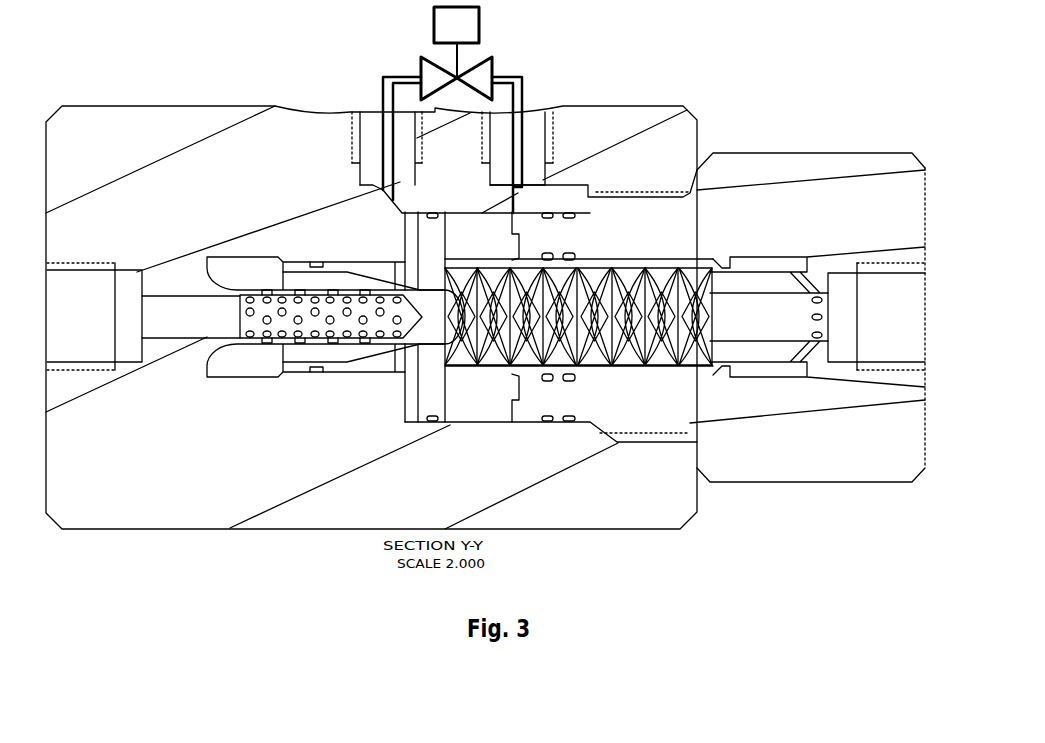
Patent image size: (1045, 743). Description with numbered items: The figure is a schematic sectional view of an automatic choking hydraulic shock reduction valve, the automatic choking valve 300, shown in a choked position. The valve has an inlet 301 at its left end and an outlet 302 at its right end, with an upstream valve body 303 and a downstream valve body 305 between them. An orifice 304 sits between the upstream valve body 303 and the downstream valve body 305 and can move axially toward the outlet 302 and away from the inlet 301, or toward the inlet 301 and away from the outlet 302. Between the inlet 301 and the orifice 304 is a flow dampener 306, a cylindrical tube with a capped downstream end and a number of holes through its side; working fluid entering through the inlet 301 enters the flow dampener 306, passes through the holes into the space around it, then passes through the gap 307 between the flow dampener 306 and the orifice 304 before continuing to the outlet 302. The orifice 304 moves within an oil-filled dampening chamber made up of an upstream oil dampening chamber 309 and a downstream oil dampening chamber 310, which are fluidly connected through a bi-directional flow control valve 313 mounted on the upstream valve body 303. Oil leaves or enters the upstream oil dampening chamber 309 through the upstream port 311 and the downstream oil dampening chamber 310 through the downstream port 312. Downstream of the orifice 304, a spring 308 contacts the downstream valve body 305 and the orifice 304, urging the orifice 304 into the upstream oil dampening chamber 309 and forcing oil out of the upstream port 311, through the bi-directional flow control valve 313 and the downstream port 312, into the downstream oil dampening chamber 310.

The automatic choking valve 300 is at (762, 97).
The inlet 301 is at (94, 316).
The outlet 302 is at (876, 316).
The upstream valve body 303 is at (371, 317).
The orifice 304 is at (422, 357).
The downstream valve body 305 is at (807, 317).
The flow dampener 306 is at (312, 316).
The gap 307 is at (407, 297).
The spring 308 is at (581, 325).
The upstream oil dampening chamber 309 is at (413, 228).
The downstream oil dampening chamber 310 is at (482, 317).
The upstream port 311 is at (395, 203).
The downstream port 312 is at (521, 193).
The bi-directional flow control valve 313 is at (477, 53).